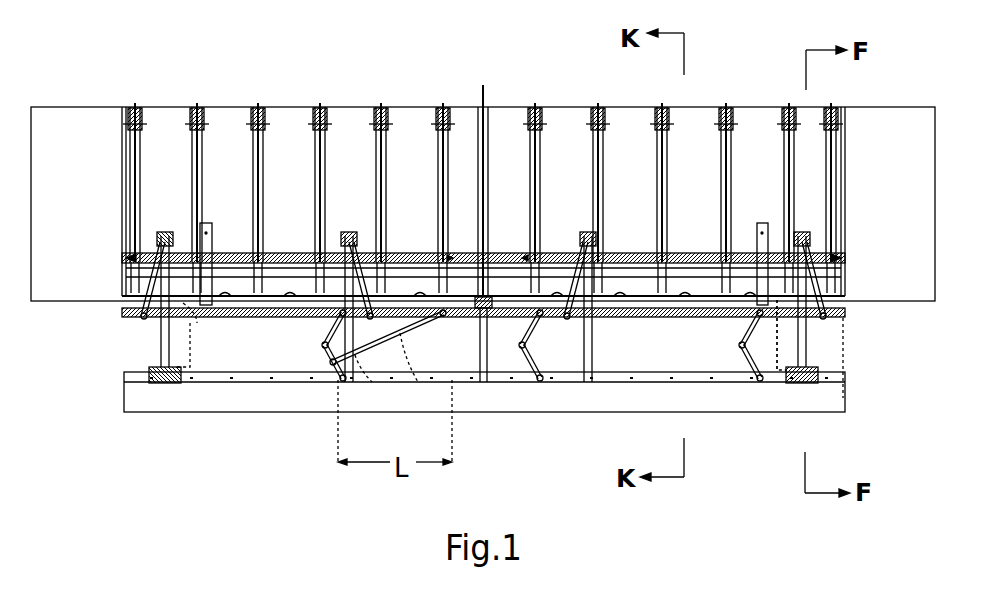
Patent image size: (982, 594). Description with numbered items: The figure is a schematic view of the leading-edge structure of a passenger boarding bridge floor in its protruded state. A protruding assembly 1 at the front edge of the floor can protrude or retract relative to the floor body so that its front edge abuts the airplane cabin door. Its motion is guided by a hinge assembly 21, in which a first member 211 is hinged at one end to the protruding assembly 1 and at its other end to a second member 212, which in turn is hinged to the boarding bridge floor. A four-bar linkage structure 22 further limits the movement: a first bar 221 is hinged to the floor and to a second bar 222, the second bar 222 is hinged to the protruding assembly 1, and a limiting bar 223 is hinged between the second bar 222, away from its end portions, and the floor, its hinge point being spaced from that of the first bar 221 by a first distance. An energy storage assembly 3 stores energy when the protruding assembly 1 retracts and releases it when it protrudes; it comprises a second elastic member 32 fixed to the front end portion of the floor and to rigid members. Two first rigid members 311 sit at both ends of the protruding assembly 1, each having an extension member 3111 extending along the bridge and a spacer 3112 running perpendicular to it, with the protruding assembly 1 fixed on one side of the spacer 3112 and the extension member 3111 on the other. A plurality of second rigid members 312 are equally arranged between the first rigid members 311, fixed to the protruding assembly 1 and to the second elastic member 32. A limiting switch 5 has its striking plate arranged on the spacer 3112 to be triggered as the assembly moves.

The protruding assembly 1 is at (822, 400).
The energy storage assembly 3 is at (546, 279).
The limiting switch 5 is at (787, 338).
The hinge assembly 21 is at (517, 385).
The four-bar linkage structure 22 is at (320, 379).
The second elastic member 32 is at (577, 272).
The first member 211 is at (743, 360).
The second member 212 is at (748, 324).
The first bar 221 is at (330, 330).
The second bar 222 is at (327, 352).
The limiting bar 223 is at (420, 385).
The first rigid member 311 is at (868, 341).
The second rigid member 312 is at (590, 343).
The extension member 3111 is at (806, 333).
The spacer 3112 is at (807, 362).